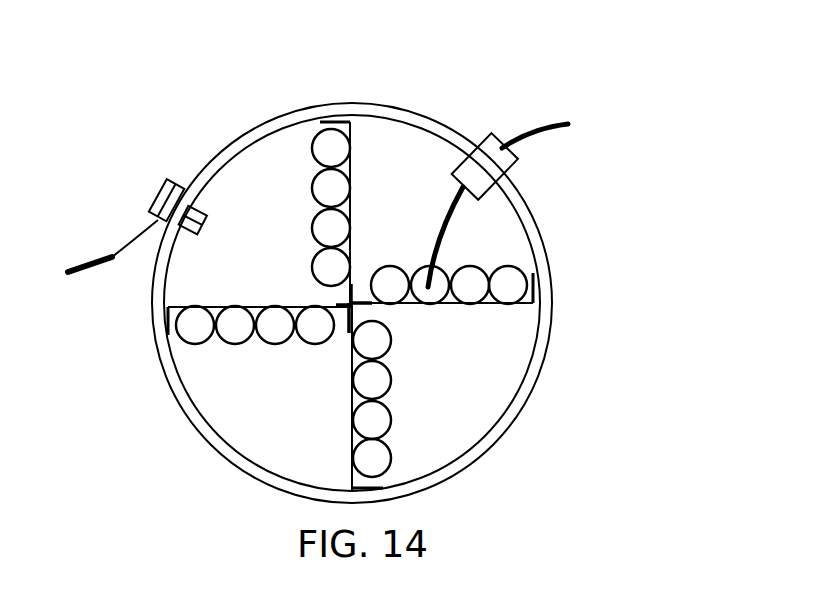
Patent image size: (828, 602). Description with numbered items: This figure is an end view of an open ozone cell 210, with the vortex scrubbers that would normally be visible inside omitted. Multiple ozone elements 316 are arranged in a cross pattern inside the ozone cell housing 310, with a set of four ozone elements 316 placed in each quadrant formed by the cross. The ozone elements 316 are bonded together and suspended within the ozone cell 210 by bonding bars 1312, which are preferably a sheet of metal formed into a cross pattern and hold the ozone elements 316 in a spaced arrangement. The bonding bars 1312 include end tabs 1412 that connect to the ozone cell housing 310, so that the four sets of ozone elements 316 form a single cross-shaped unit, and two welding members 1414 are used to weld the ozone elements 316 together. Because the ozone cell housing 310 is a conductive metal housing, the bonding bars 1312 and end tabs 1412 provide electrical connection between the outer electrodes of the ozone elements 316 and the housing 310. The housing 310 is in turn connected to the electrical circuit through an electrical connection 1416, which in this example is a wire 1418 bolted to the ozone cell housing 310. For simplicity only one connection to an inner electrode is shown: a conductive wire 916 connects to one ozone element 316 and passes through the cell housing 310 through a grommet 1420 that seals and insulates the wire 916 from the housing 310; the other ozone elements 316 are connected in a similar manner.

The open ozone cell 210 is at (229, 123).
The ozone cell housing 310 is at (295, 113).
The bonding bars 1312 is at (352, 163).
The conductive wire 916 is at (561, 123).
The grommet 1420 is at (491, 132).
The ozone elements 316 is at (523, 270).
The end tabs 1412 is at (533, 293).
The welding members 1414 is at (370, 310).
The electrical connection 1416 is at (165, 188).
The wire 1418 is at (98, 257).